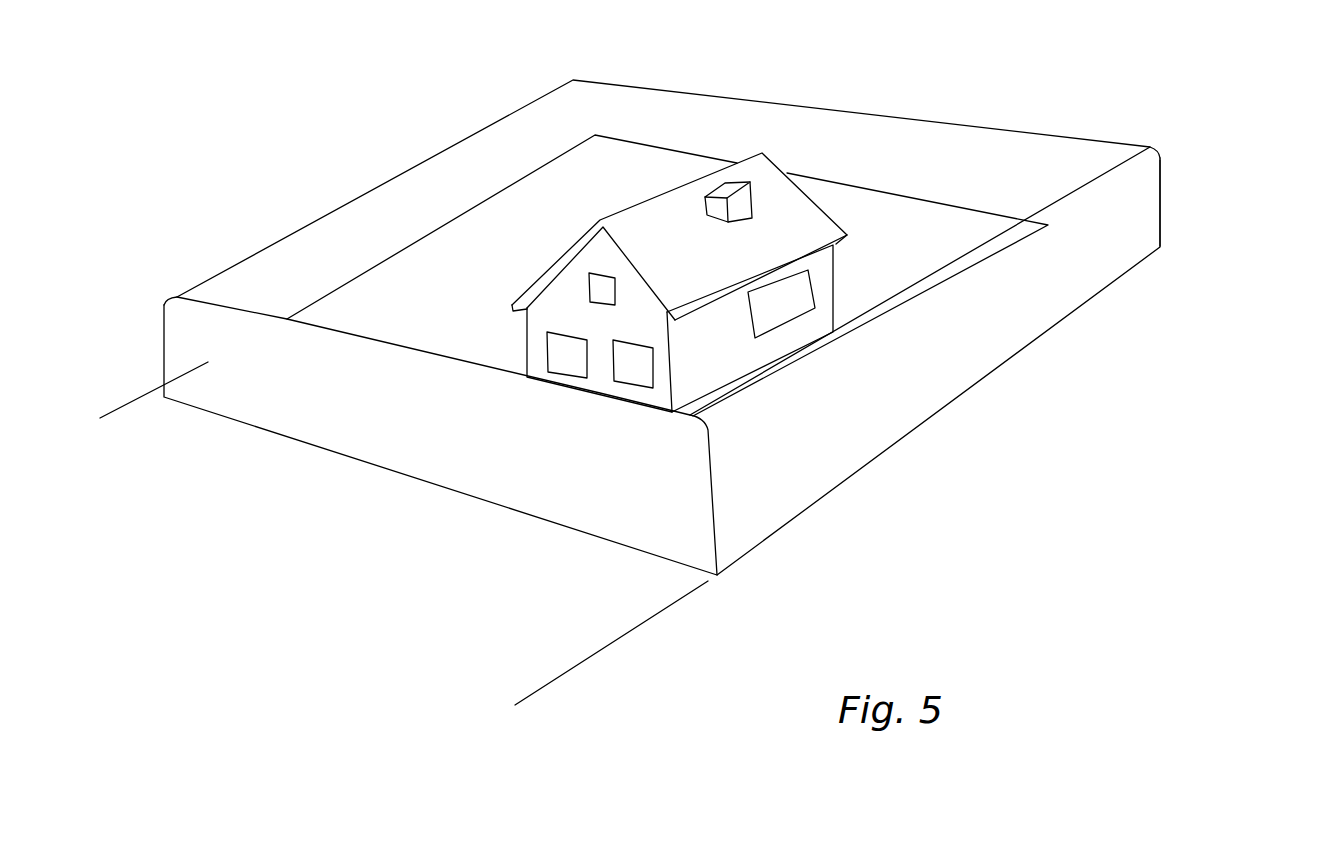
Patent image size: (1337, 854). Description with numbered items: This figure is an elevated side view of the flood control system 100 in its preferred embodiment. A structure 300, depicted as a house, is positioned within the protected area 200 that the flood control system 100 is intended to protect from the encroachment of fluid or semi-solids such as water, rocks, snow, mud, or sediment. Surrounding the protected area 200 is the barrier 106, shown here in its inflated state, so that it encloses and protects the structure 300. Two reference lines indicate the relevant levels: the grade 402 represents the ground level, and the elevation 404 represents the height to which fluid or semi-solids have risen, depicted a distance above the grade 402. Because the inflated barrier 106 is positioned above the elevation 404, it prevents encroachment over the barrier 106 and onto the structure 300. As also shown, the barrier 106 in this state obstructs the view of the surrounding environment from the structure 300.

The flood control system 100 is at (1177, 245).
The barrier 106 is at (1148, 188).
The protected area 200 is at (667, 275).
The structure 300 is at (823, 210).
The grade 402 is at (548, 673).
The elevation 404 is at (132, 400).